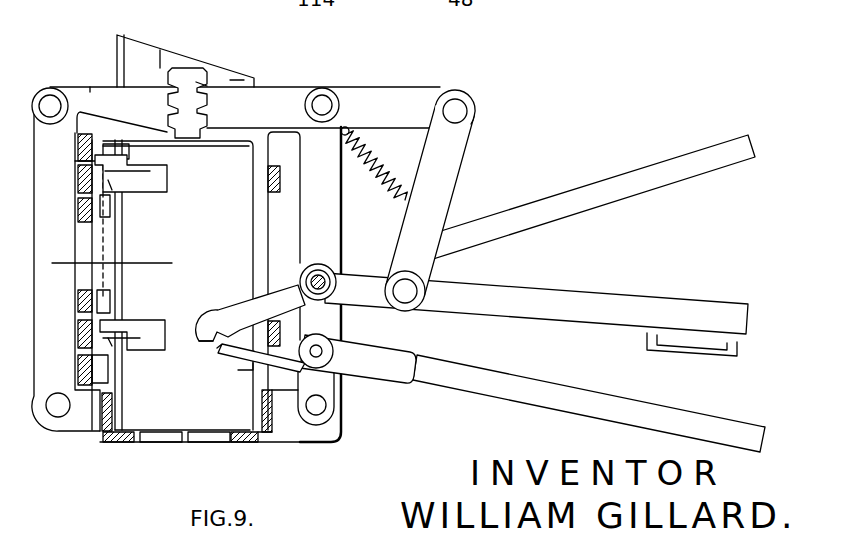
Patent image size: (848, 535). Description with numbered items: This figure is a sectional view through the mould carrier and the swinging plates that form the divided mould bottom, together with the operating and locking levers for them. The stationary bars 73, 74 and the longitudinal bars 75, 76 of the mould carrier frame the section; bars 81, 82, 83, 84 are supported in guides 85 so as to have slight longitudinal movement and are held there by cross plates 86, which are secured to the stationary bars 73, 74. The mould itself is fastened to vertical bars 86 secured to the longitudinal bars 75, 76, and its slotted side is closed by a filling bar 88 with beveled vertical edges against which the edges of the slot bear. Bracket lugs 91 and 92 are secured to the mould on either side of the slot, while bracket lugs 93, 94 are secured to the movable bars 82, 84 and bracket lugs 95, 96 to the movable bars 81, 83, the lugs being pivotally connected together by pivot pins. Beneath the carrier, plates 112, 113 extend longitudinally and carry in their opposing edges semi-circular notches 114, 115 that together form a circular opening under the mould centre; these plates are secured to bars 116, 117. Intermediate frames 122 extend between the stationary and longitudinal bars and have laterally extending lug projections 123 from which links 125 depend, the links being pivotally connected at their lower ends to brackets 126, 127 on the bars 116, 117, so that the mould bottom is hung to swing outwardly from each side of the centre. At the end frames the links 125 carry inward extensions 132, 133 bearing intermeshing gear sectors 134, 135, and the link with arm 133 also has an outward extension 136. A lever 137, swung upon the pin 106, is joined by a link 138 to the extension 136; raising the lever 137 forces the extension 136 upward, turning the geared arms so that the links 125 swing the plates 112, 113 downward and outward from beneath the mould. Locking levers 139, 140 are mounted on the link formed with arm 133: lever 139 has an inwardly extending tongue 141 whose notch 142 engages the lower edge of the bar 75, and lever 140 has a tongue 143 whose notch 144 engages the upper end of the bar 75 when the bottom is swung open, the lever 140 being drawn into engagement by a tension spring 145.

The stationary bar 73 is at (67, 184).
The stationary bar 74 is at (80, 340).
The longitudinal bar 75 is at (283, 329).
The longitudinal bar 76 is at (282, 181).
The bar 81 is at (80, 152).
The bar 82 is at (80, 213).
The bar 83 is at (80, 305).
The bar 84 is at (80, 376).
The mould 85 is at (236, 78).
The cross plate 86 is at (82, 165).
The filling bar 88 is at (116, 40).
The bracket lug 91 is at (112, 186).
The bracket lug 92 is at (167, 187).
The bracket lug 93 is at (100, 215).
The bracket lug 94 is at (97, 368).
The bracket lug 95 is at (106, 158).
The bracket lug 96 is at (100, 297).
The pin 106 is at (331, 265).
The plate 112 is at (122, 443).
The plate 113 is at (252, 443).
The semi-circular notch 114 is at (168, 443).
The semi-circular notch 115 is at (213, 443).
The bar 116 is at (97, 442).
The bar 117 is at (286, 424).
The intermediate frame 122 is at (255, 244).
The lug projection 123 is at (78, 123).
The link 125 is at (310, 246).
The bracket 126 is at (75, 418).
The bracket 127 is at (305, 424).
The inward extension 132 is at (100, 100).
The inward extension 133 is at (258, 108).
The gear sector 134 is at (185, 48).
The gear sector 135 is at (201, 76).
The outward extension 136 is at (417, 98).
The lever 137 is at (575, 303).
The link 138 is at (440, 184).
The locking lever 139 is at (462, 378).
The locking lever 140 is at (525, 224).
The tongue 141 is at (247, 353).
The notch 142 is at (335, 351).
The tongue 143 is at (236, 312).
The notch 144 is at (212, 313).
The tension spring 145 is at (387, 173).